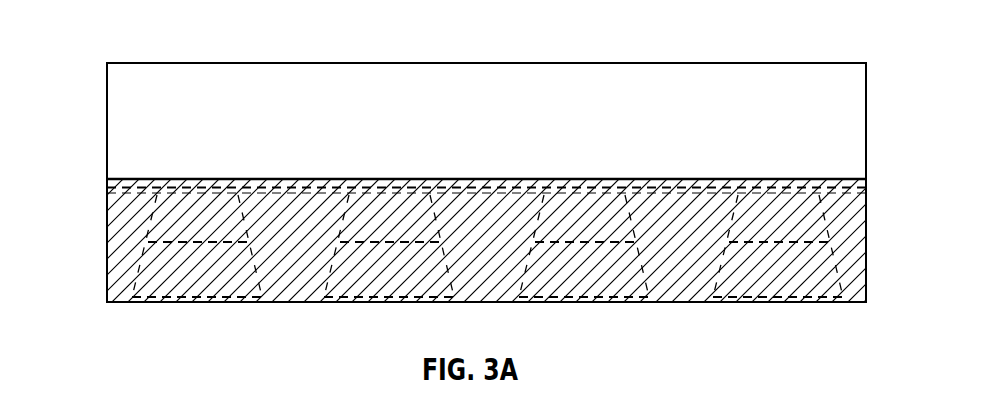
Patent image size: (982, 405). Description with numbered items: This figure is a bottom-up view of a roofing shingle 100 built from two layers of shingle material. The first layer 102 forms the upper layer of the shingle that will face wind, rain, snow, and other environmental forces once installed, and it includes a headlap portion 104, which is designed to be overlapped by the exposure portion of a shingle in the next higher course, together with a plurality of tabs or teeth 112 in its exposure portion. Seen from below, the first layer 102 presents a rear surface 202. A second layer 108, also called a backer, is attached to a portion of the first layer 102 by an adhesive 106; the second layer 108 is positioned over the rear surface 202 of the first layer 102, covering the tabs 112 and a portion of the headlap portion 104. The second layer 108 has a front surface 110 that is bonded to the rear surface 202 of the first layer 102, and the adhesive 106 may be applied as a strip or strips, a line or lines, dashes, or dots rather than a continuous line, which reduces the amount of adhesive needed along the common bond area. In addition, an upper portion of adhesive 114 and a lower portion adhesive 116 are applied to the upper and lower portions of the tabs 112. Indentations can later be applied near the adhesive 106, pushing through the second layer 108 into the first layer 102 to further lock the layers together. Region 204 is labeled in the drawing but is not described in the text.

The roofing shingle 100 is at (165, 32).
The first layer 102 is at (130, 128).
The headlap portion 104 is at (123, 88).
The adhesive 106 is at (112, 193).
The second layer 108 is at (125, 288).
The front surface 110 is at (127, 230).
The tabs 112 is at (150, 268).
The upper portion of adhesive 114 is at (210, 242).
The lower portion adhesive 116 is at (165, 295).
The rear surface 202 is at (498, 83).
The lower hatched region 204 is at (667, 262).